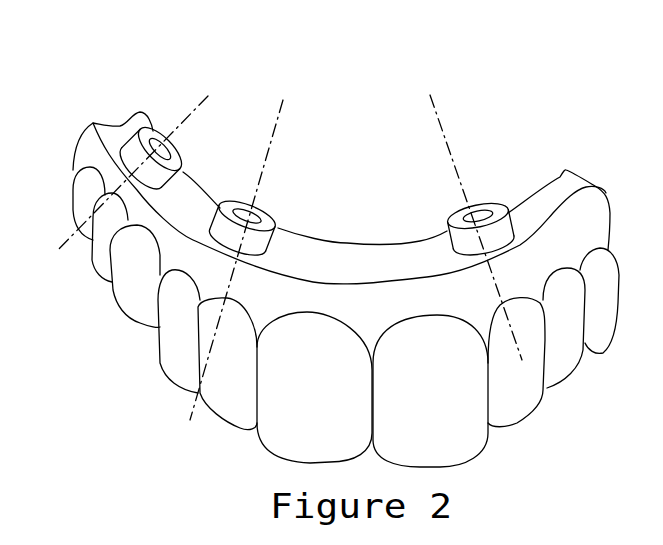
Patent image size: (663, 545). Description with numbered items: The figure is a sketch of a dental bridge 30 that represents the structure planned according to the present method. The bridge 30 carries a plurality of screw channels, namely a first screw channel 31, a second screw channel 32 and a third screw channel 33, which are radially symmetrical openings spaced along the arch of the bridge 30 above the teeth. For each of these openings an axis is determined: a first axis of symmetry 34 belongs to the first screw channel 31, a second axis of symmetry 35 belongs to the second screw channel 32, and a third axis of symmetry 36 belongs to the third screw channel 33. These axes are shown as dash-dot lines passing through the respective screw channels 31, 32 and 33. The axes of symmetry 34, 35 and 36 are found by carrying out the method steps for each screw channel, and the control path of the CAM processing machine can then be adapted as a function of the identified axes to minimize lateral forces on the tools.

The bridge 30 is at (353, 243).
The first screw channel 31 is at (183, 143).
The second screw channel 32 is at (243, 204).
The third screw channel 33 is at (483, 204).
The first axis of symmetry 34 is at (199, 102).
The second axis of symmetry 35 is at (283, 108).
The third axis of symmetry 36 is at (438, 113).